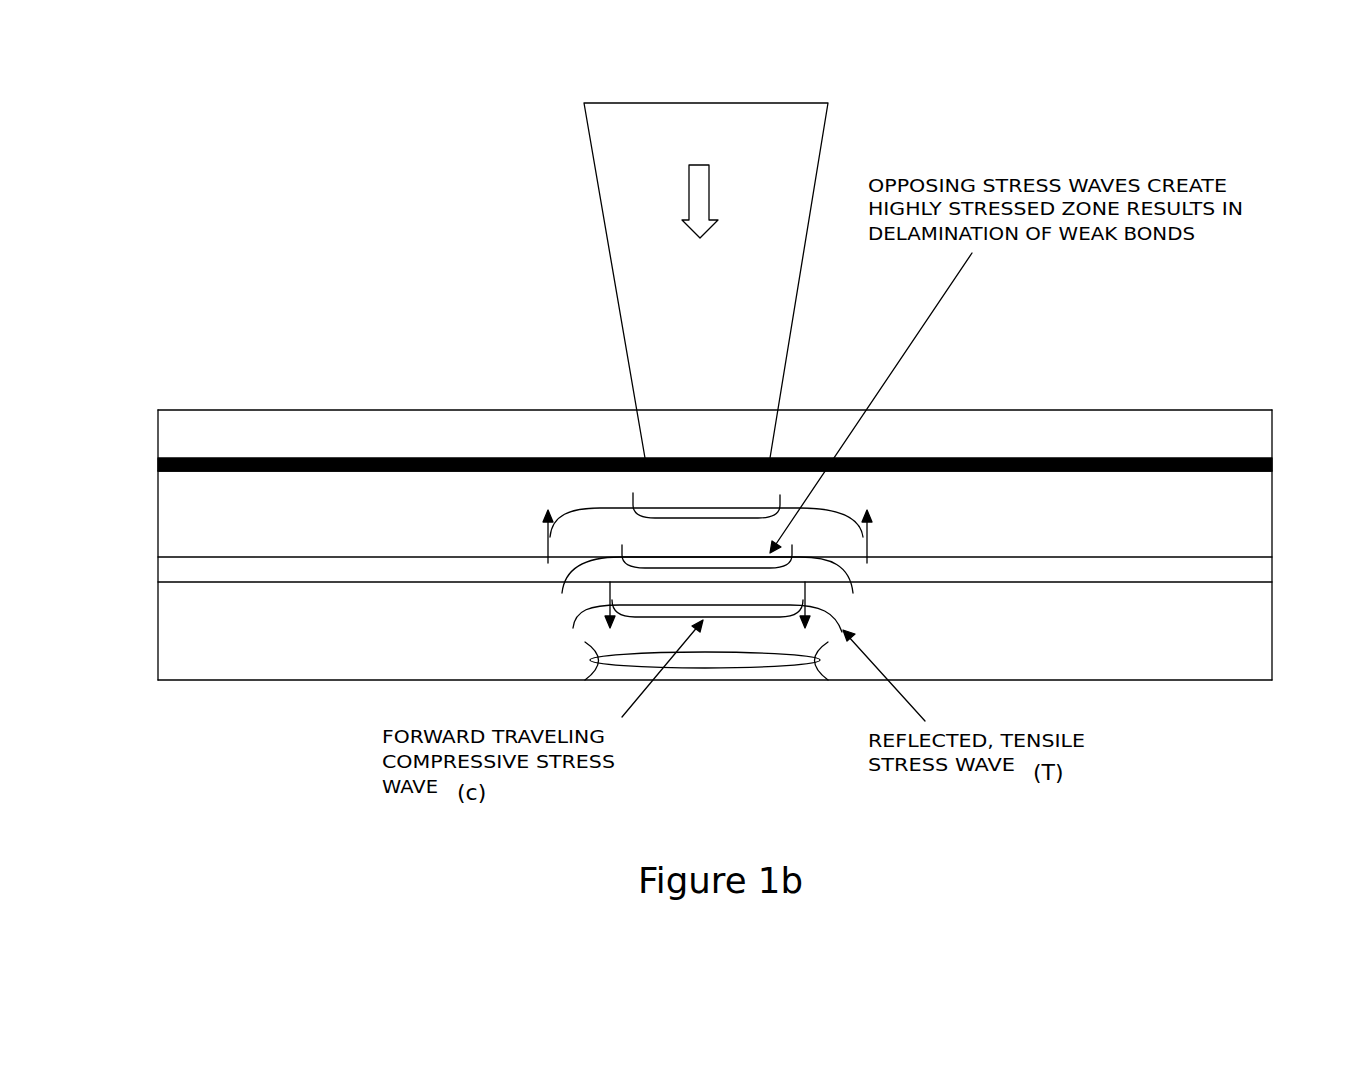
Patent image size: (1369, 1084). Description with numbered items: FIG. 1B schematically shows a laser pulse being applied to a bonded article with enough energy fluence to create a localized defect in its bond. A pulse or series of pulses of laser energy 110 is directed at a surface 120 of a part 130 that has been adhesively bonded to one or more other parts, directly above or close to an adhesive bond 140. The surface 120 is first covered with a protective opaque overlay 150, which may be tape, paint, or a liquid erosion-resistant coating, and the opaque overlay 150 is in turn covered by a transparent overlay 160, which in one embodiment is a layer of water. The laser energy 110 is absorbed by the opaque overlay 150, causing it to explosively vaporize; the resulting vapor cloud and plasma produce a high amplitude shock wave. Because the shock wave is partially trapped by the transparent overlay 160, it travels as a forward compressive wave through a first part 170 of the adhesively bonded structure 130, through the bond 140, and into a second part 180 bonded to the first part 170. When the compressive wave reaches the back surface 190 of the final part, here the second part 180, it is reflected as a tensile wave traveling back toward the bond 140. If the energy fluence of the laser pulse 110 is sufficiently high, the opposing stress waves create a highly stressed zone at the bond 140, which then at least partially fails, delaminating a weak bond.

The laser energy 110 is at (836, 131).
The surface 120 is at (1216, 488).
The part 130 is at (1175, 723).
The adhesive bond 140 is at (192, 568).
The opaque overlay 150 is at (1038, 456).
The transparent overlay 160 is at (338, 432).
The first part 170 is at (169, 506).
The second part 180 is at (167, 654).
The back surface 190 is at (1227, 679).